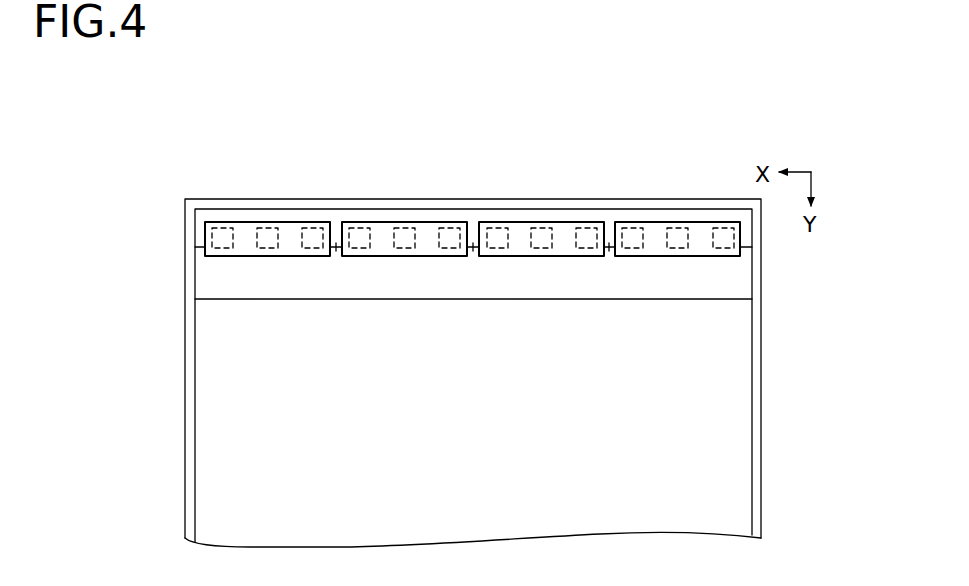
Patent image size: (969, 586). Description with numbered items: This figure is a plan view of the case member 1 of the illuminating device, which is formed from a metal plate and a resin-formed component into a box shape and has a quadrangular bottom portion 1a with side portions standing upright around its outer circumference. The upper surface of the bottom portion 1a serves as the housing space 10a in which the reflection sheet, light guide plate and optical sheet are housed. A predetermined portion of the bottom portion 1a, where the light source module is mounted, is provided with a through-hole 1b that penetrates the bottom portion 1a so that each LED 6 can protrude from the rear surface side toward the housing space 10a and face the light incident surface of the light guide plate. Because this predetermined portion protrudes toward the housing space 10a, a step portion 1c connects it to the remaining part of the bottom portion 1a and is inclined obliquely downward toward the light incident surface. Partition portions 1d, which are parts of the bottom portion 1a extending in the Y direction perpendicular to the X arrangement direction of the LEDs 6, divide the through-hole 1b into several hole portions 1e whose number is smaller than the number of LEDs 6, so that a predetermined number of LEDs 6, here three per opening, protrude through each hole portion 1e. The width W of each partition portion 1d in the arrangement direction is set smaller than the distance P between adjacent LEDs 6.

The case member 1 is at (185, 424).
The bottom portion 1a is at (237, 371).
The through-hole 1b is at (472, 182).
The step portion 1c is at (218, 289).
The partition portion 1d is at (336, 251).
The hole portion 1e is at (252, 226).
The LED 6 is at (218, 228).
The housing space 10a is at (253, 480).
The width of the partition portion W is at (342, 222).
The distance between adjacent LEDs P is at (323, 256).